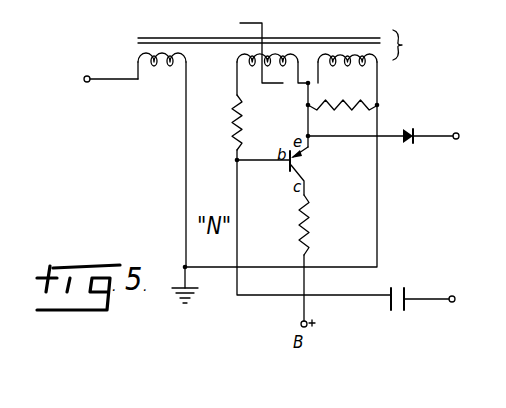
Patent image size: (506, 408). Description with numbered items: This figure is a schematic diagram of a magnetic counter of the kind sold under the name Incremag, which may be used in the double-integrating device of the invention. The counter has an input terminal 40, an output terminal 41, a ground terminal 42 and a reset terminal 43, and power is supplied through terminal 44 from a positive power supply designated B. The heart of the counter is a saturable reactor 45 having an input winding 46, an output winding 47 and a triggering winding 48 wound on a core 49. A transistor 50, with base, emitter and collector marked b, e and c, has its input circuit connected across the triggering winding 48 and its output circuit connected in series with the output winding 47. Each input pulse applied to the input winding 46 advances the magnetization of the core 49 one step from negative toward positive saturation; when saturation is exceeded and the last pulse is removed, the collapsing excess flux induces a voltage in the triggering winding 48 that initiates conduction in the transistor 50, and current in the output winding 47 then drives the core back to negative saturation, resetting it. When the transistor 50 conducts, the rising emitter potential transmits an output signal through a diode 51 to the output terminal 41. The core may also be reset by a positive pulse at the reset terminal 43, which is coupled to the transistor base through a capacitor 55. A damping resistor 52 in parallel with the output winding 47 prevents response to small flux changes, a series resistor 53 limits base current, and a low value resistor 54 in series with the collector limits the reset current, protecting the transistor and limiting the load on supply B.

The input terminal 40 is at (107, 57).
The output terminal 41 is at (457, 131).
The ground terminal 42 is at (183, 264).
The reset terminal 43 is at (455, 295).
The power supply terminal 44 is at (300, 324).
The saturable reactor 45 is at (287, 133).
The input winding 46 is at (153, 67).
The output winding 47 is at (333, 78).
The triggering winding 48 is at (258, 70).
The core 49 is at (298, 40).
The transistor 50 is at (292, 164).
The diode 51 is at (441, 113).
The damping resistor 52 is at (358, 117).
The series resistor 53 is at (235, 133).
The low value resistor 54 is at (297, 218).
The capacitor 55 is at (400, 285).